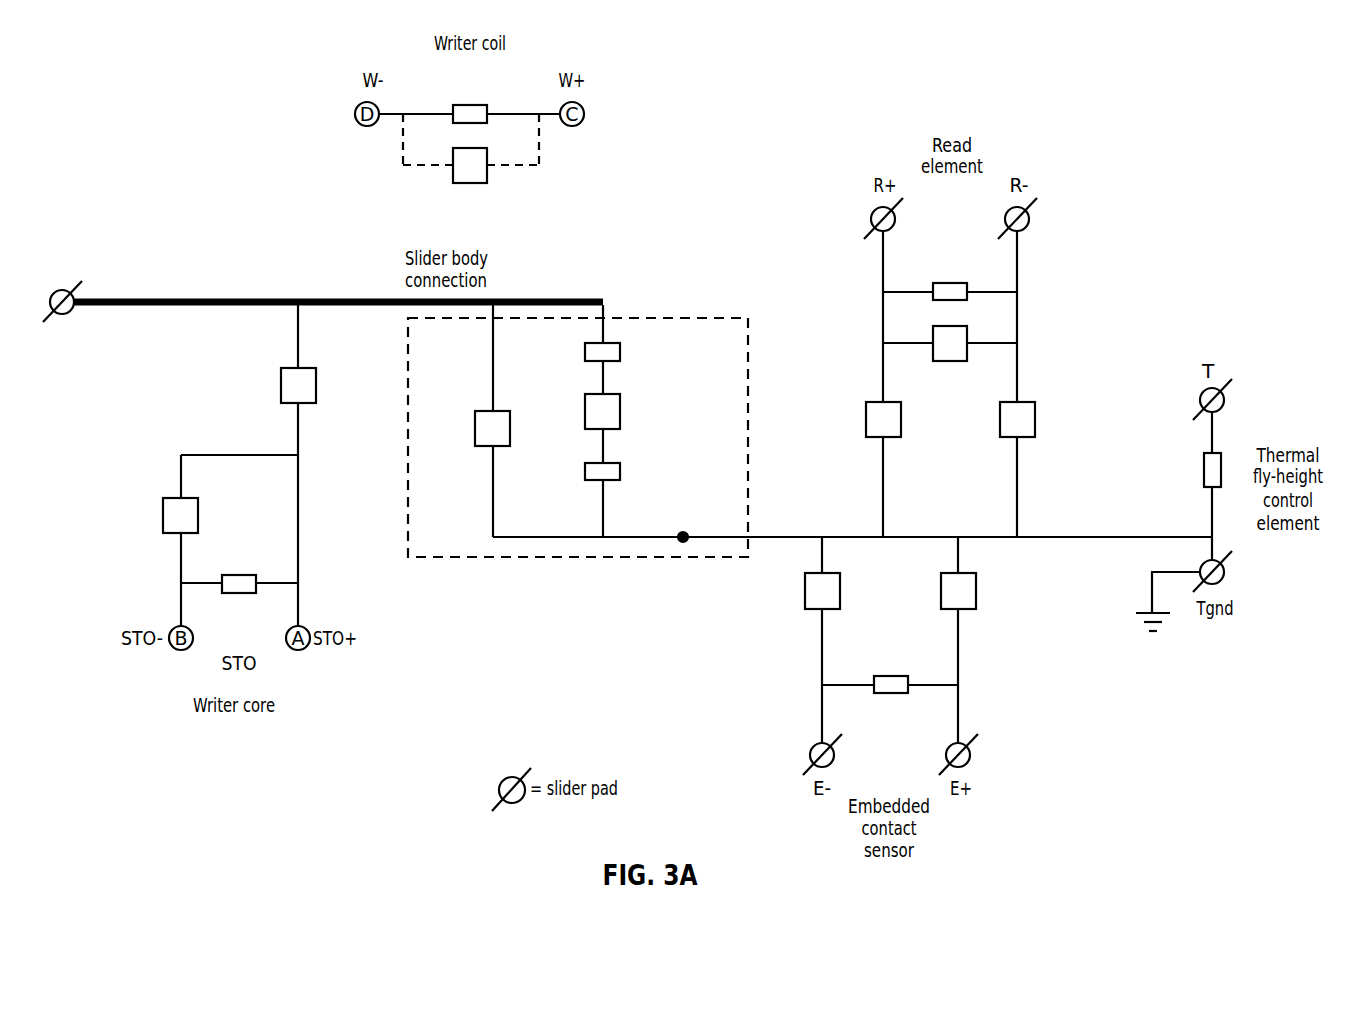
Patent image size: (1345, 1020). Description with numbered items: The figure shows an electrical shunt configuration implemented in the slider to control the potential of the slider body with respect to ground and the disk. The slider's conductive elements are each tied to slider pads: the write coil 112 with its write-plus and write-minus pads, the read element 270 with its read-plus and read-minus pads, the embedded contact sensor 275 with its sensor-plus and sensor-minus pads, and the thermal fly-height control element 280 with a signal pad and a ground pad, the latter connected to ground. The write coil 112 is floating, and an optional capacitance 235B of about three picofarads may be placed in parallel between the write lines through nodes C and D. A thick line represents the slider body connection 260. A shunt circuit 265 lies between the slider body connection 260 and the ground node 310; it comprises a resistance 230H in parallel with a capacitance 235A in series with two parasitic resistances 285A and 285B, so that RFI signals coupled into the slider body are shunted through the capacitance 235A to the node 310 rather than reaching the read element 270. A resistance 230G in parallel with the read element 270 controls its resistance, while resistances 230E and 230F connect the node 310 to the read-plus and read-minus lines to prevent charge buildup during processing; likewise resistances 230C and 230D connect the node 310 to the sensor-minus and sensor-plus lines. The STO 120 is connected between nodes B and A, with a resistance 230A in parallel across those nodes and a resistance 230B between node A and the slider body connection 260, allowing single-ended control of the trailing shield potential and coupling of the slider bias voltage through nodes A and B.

The write coil 112 is at (471, 105).
The capacitance 235B is at (470, 183).
The slider body connection 260 is at (376, 299).
The resistance 230B is at (316, 386).
The resistance 230A is at (163, 511).
The STO 120 is at (238, 593).
The shunt circuit 265 is at (515, 560).
The resistance 230H is at (475, 430).
The parasitic resistance 285B is at (620, 352).
The capacitance 235A is at (585, 410).
The parasitic resistance 285A is at (620, 470).
The node 310 is at (683, 537).
The read element 270 is at (950, 283).
The resistance 230G is at (950, 361).
The resistance 230E is at (866, 420).
The resistance 230F is at (1035, 420).
The resistance 230C is at (805, 591).
The resistance 230D is at (976, 591).
The embedded contact sensor 275 is at (891, 693).
The thermal fly-height control element 280 is at (1204, 468).